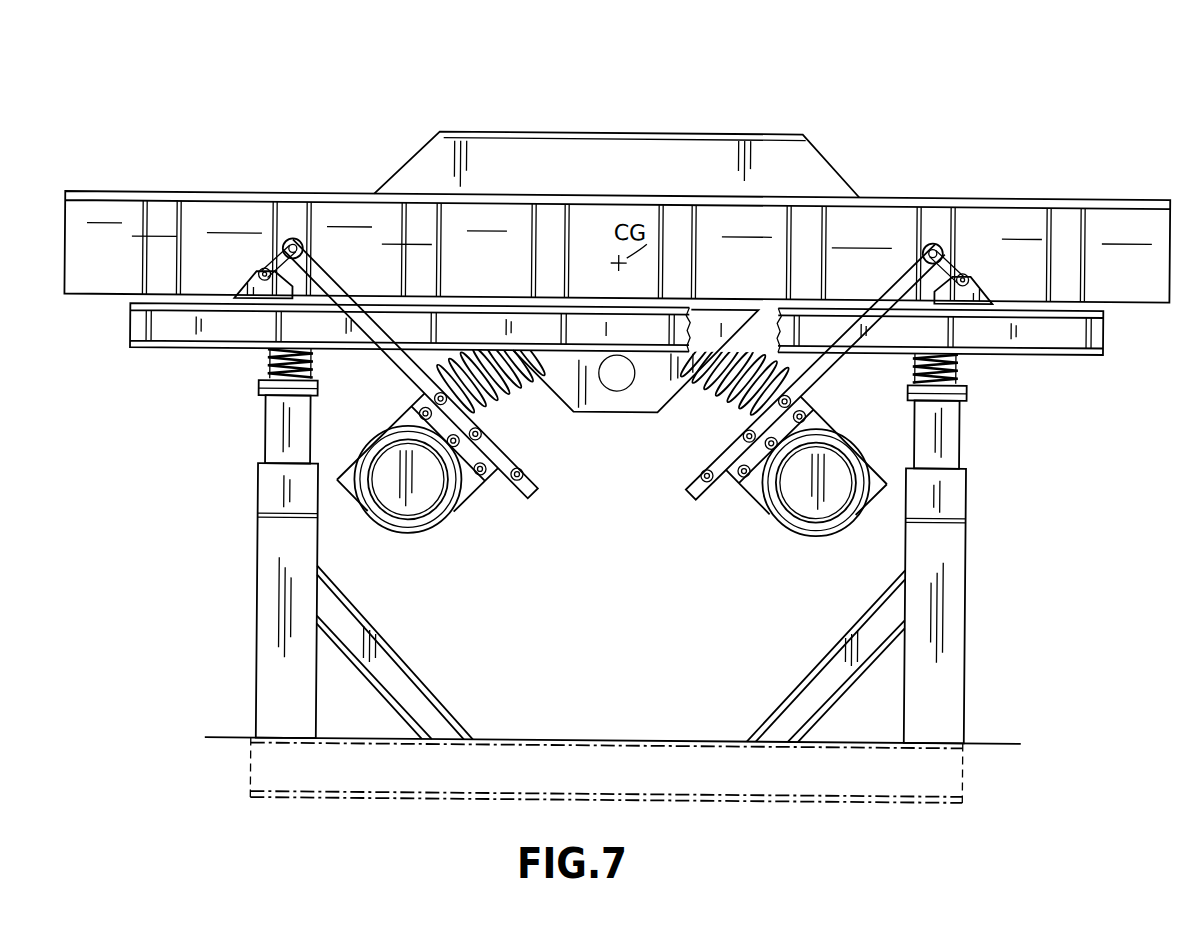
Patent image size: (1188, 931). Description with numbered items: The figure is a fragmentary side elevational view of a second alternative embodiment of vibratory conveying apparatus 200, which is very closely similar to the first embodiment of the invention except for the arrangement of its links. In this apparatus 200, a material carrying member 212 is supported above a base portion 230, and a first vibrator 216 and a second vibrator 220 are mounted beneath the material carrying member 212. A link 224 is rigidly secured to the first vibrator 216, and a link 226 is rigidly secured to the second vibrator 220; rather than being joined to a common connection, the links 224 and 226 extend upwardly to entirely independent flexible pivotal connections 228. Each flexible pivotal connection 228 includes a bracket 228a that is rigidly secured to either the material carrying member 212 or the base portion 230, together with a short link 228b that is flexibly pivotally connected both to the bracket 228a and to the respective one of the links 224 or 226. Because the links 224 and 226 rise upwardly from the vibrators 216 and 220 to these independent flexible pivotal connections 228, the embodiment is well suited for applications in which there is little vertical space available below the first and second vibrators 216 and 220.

The vibratory conveying apparatus 200 is at (665, 99).
The material carrying member 212 is at (884, 178).
The first vibrator 216 is at (450, 546).
The second vibrator 220 is at (764, 536).
The link 224 is at (415, 385).
The link 226 is at (812, 375).
The flexible pivotal connection 228 is at (264, 233).
The bracket 228a is at (983, 284).
The short link 228b is at (973, 290).
The base portion 230 is at (1023, 335).